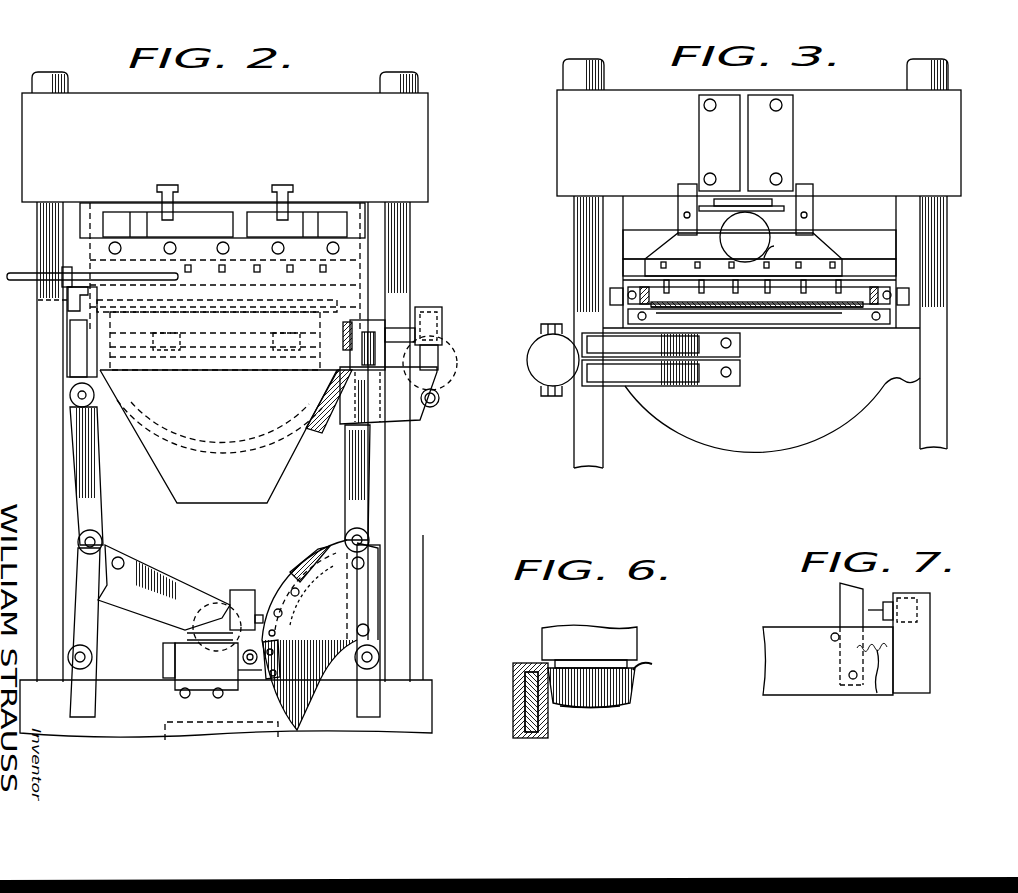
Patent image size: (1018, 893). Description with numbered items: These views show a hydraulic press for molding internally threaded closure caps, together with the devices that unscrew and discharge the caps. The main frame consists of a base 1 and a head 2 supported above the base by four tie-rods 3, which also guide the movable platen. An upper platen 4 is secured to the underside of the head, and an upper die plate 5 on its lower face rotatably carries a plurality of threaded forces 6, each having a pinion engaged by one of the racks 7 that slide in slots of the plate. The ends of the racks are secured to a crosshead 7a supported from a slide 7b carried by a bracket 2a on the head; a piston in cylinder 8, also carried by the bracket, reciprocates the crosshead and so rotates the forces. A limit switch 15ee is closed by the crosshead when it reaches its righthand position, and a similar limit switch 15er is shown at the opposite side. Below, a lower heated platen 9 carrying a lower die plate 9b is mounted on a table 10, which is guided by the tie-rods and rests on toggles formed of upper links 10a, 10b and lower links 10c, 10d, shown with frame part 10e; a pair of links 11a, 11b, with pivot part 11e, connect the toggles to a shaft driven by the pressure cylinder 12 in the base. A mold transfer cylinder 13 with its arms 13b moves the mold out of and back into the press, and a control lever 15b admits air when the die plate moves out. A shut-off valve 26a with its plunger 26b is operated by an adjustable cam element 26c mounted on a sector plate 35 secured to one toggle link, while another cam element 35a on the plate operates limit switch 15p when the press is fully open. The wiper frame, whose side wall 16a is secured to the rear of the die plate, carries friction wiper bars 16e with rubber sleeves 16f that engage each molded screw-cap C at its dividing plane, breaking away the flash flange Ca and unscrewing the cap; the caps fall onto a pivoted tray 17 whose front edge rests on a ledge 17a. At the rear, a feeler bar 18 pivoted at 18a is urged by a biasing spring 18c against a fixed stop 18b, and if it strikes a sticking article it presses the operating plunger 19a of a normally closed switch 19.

In FIG. 2, the base 1 is at (423, 703).
In FIG. 2, the head 2 is at (428, 132).
In FIG. 3, the head 2 is at (661, 95).
In FIG. 3, the bracket 2a is at (747, 98).
In FIG. 2, the tie-rods 3 is at (410, 285).
In FIG. 2, the upper platen 4 is at (352, 247).
In FIG. 3, the upper platen 4 is at (894, 239).
In FIG. 2, the upper die plate 5 is at (352, 272).
In FIG. 3, the upper die plate 5 is at (894, 268).
In FIG. 6, the threaded forces 6 is at (633, 633).
In FIG. 3, the racks 7 is at (774, 249).
In FIG. 3, the crosshead 7a is at (834, 247).
In FIG. 3, the slide 7b is at (765, 199).
In FIG. 3, the cylinder 8 is at (719, 242).
In FIG. 3, the lower heated platen 9 is at (897, 321).
In FIG. 2, the lower die plate 9b is at (100, 297).
In FIG. 3, the lower die plate 9b is at (904, 281).
In FIG. 2, the table 10 is at (322, 410).
In FIG. 3, the table 10 is at (916, 362).
In FIG. 2, the upper link 10a is at (100, 483).
In FIG. 2, the upper link 10b is at (352, 478).
In FIG. 2, the lower link 10c is at (98, 612).
In FIG. 2, the lower link 10d is at (365, 543).
In FIG. 2, the carriage frame 10e is at (230, 363).
In FIG. 2, the link 11a is at (152, 562).
In FIG. 2, the link 11b is at (277, 600).
In FIG. 2, the connecting rod 11e is at (227, 622).
In FIG. 2, the pressure cylinder 12 is at (278, 737).
In FIG. 2, the mold transfer cylinder 13 is at (451, 349).
In FIG. 3, the mold transfer cylinder 13 is at (536, 374).
In FIG. 3, the shaft arms 13b is at (608, 379).
In FIG. 2, the control lever 15b is at (302, 320).
In FIG. 2, the limit switch LSp 15p is at (243, 598).
In FIG. 3, the hanger 15er is at (680, 184).
In FIG. 3, the limit switch LSee 15ee is at (810, 184).
In FIG. 7, the side wall 16a is at (775, 628).
In FIG. 6, the friction wiper bars 16e is at (533, 732).
In FIG. 3, the rubber sleeves 16f is at (824, 297).
In FIG. 6, the rubber sleeves 16f is at (513, 712).
In FIG. 3, the tray 17 is at (784, 307).
In FIG. 3, the ledge 17a is at (752, 309).
In FIG. 7, the feeler bar 18 is at (840, 588).
In FIG. 7, the pivot 18a is at (849, 676).
In FIG. 7, the fixed stop 18b is at (831, 637).
In FIG. 7, the biasing spring 18c is at (877, 693).
In FIG. 7, the switch 19 is at (903, 597).
In FIG. 7, the operating plunger 19a is at (868, 612).
In FIG. 2, the shut-off valve 26a is at (175, 660).
In FIG. 2, the operating plunger 26b is at (247, 677).
In FIG. 2, the cam element 26c is at (278, 666).
In FIG. 2, the sector plate 35 is at (337, 602).
In FIG. 2, the cam element 35a is at (273, 608).
In FIG. 6, the screw-cap C is at (636, 697).
In FIG. 6, the flash flange Ca is at (652, 664).